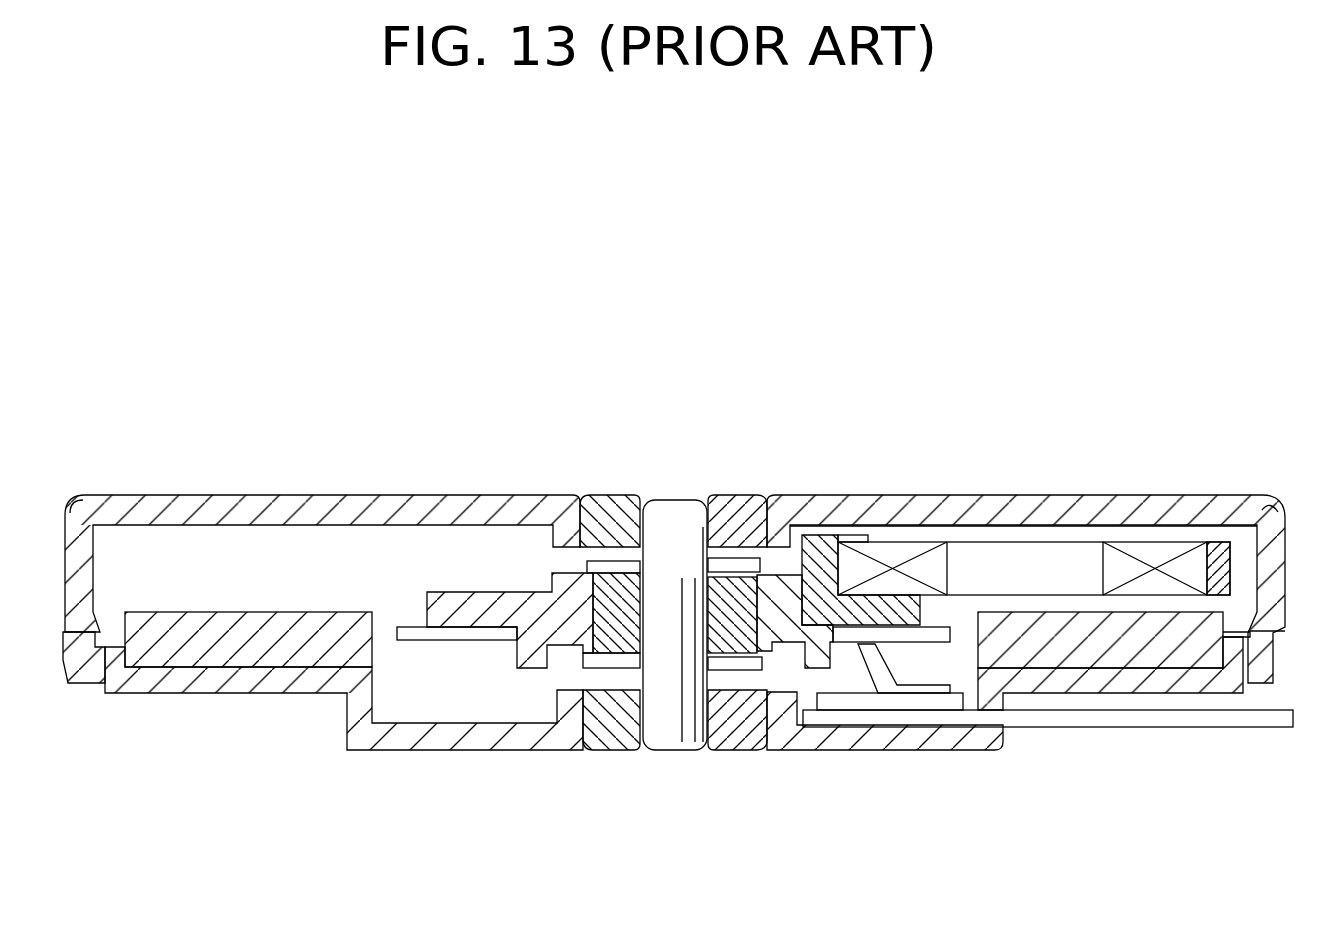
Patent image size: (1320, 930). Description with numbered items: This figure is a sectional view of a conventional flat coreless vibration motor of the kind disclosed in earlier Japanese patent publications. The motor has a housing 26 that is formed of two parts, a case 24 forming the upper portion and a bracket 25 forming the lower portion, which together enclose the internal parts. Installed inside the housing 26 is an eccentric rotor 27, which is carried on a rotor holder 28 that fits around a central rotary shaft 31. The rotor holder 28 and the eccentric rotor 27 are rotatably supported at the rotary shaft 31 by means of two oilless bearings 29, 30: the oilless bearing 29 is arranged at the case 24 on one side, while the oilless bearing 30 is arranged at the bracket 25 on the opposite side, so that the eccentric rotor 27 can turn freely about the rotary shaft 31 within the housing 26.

The case 24 is at (1131, 497).
The bracket 25 is at (888, 740).
The housing 26 is at (922, 492).
The eccentric rotor 27 is at (993, 567).
The rotor holder 28 is at (617, 613).
The oilless bearing 29 is at (745, 500).
The oilless bearing 30 is at (745, 740).
The rotary shaft 31 is at (667, 737).